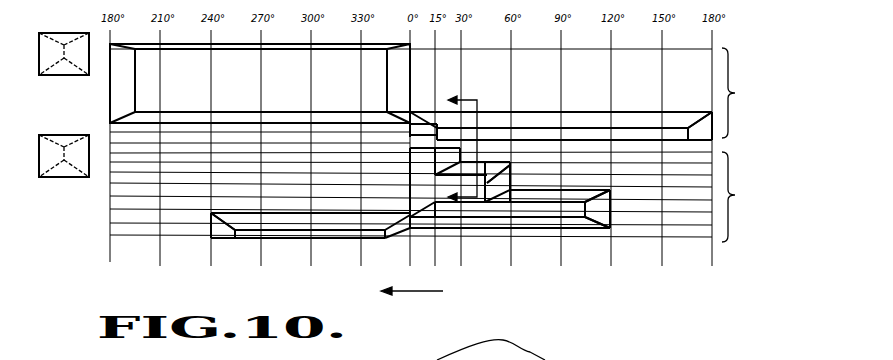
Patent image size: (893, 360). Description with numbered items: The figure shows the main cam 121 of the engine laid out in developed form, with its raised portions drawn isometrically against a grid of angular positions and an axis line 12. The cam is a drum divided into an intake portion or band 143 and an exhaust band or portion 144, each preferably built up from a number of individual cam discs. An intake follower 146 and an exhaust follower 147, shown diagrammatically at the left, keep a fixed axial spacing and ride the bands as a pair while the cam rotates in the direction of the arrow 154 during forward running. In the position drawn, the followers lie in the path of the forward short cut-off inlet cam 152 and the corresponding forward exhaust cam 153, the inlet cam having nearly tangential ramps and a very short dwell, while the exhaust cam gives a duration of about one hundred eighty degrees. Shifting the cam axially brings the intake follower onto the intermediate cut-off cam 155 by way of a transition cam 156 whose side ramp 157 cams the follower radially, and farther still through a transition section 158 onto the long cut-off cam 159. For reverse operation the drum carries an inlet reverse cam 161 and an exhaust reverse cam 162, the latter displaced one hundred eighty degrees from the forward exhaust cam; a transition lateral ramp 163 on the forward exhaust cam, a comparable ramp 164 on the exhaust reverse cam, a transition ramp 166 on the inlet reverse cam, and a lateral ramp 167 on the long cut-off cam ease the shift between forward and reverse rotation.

The axis / direction reference 12 is at (455, 148).
The cam 121 is at (200, 238).
The intake portion or band 143 is at (724, 241).
The exhaust band or portion 144 is at (724, 137).
The intake follower 146 is at (73, 172).
The exhaust follower 147 is at (74, 70).
The forward short cut-off inlet cam 152 is at (420, 158).
The forward exhaust cam 153 is at (378, 90).
The arrow 154 is at (430, 292).
The intermediate cut-off cam 155 is at (508, 169).
The transition cam 156 is at (617, 167).
The side ramp 157 is at (488, 170).
The transition section 158 is at (595, 201).
The long cut-off cam 159 is at (577, 211).
The inlet reverse cam 161 is at (349, 232).
The exhaust reverse cam 162 is at (672, 130).
The transition lateral ramp 163 is at (350, 120).
The ramp 164 is at (580, 119).
The transition ramp 166 is at (297, 231).
The lateral ramp 167 is at (547, 224).